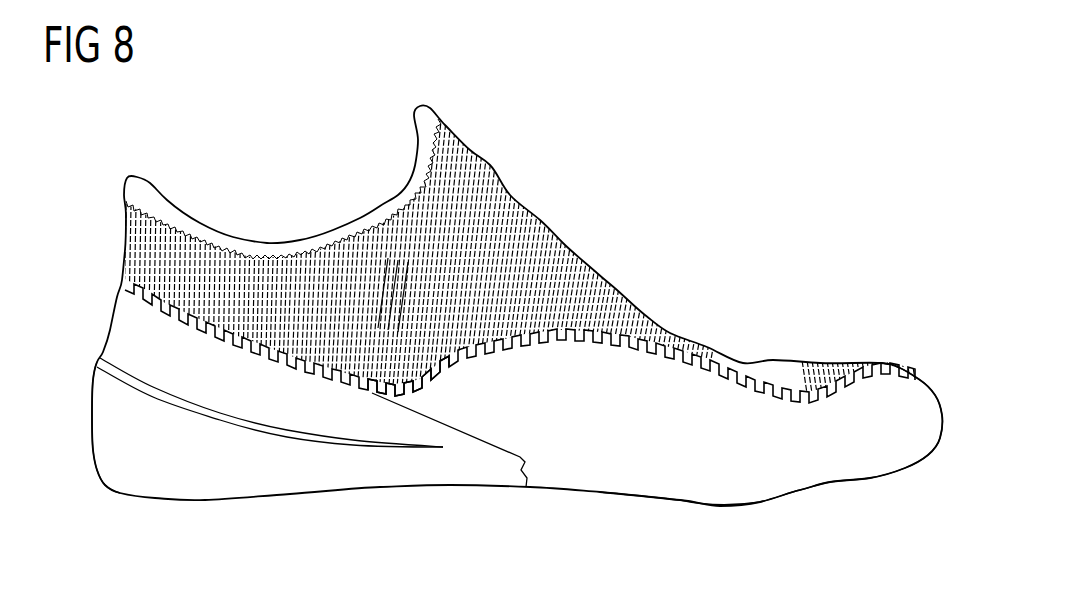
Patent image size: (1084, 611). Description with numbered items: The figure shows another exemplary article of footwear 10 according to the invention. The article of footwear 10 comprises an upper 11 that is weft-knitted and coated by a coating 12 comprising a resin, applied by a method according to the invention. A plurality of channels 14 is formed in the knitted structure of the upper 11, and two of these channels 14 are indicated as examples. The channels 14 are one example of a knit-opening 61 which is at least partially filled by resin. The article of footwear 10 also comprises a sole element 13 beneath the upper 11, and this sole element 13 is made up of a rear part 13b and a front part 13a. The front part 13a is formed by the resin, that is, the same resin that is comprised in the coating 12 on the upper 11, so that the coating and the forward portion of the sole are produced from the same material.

The article of footwear 10 is at (160, 173).
The upper 11 is at (438, 222).
The coating 12 is at (908, 417).
The sole element 13 is at (575, 494).
The front part 13a is at (872, 460).
The rear part 13b is at (107, 423).
The channels 14 is at (420, 350).
The knit-opening 61 is at (433, 363).